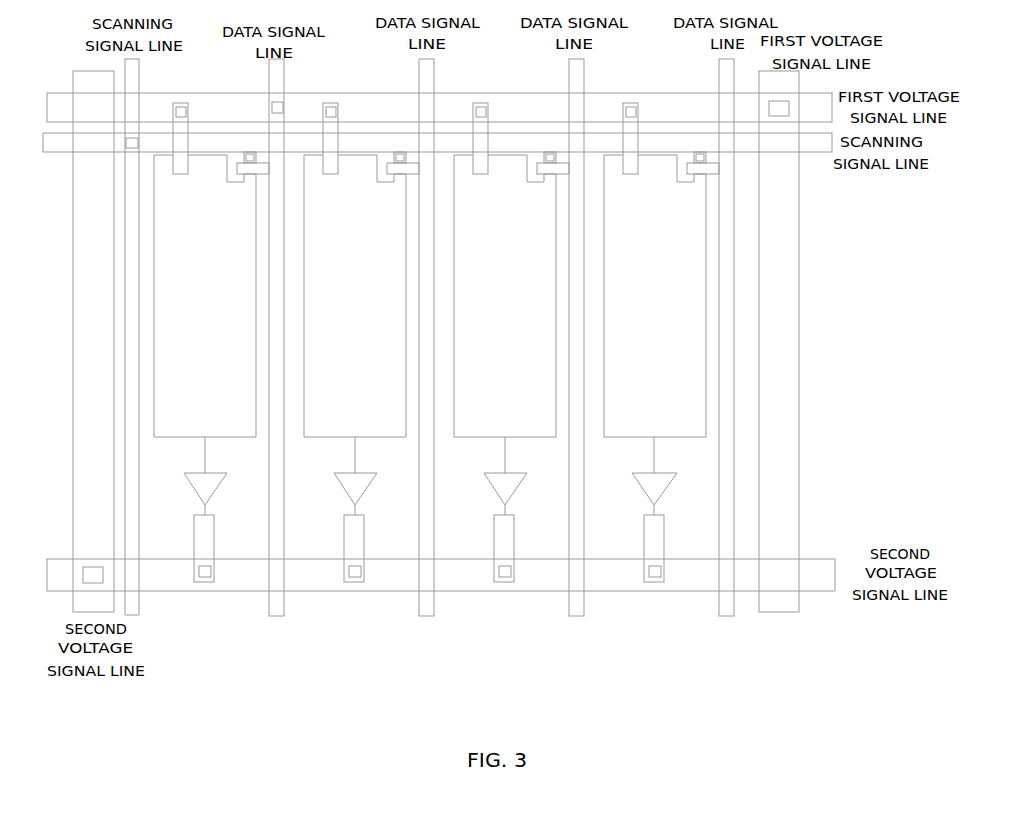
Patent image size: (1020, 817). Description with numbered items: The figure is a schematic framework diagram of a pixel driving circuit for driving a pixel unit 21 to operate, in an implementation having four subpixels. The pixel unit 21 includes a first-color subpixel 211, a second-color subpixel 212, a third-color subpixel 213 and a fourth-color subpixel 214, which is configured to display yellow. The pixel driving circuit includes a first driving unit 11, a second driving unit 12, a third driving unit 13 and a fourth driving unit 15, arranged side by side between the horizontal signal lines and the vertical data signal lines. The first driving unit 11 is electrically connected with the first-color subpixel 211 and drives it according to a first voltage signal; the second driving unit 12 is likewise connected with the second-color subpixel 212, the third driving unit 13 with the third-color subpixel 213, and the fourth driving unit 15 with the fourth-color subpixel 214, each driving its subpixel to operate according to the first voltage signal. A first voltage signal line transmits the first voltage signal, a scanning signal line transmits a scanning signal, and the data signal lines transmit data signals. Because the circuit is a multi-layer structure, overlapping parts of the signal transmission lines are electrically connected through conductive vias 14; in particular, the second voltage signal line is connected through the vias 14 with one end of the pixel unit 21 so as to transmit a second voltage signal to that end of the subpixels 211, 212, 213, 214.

The first driving unit 11 is at (233, 215).
The second driving unit 12 is at (383, 215).
The third driving unit 13 is at (533, 215).
The via 14 is at (205, 569).
The fourth driving unit 15 is at (683, 215).
The pixel unit 21 is at (461, 570).
The first-color subpixel 211 is at (205, 485).
The second-color subpixel 212 is at (355, 485).
The third-color subpixel 213 is at (505, 485).
The fourth-color subpixel 214 is at (654, 485).